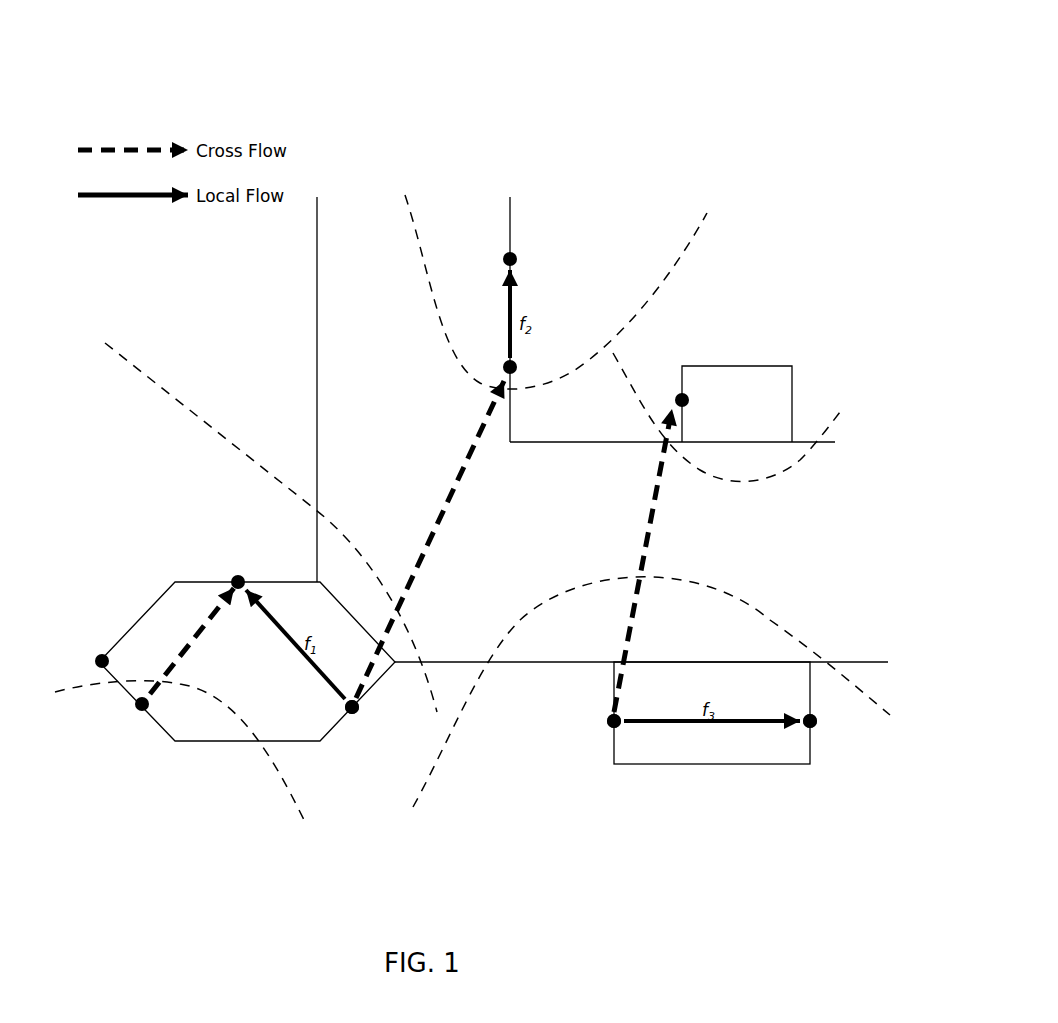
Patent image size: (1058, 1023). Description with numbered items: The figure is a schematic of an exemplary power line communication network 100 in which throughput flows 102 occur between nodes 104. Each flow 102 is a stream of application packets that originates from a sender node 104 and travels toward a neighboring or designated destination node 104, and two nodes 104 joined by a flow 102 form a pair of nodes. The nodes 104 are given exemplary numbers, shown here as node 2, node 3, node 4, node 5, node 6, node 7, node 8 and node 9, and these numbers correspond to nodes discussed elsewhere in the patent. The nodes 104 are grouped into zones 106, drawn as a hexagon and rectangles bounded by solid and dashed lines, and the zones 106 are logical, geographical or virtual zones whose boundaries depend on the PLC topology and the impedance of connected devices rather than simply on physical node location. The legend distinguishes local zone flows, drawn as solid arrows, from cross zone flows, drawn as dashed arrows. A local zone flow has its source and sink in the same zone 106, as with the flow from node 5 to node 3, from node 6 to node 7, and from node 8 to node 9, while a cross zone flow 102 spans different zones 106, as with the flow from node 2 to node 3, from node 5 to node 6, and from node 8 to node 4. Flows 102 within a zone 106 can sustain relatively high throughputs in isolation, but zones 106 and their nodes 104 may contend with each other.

The power line communication network 100 is at (674, 80).
The throughput flow 102 is at (432, 462).
The node 104 is at (352, 718).
The zone 106 is at (710, 870).
The node 2 is at (136, 716).
The node 3 is at (238, 570).
The node 4 is at (676, 391).
The node 5 is at (359, 716).
The node 6 is at (501, 366).
The node 7 is at (501, 258).
The node 8 is at (605, 721).
The node 9 is at (818, 721).